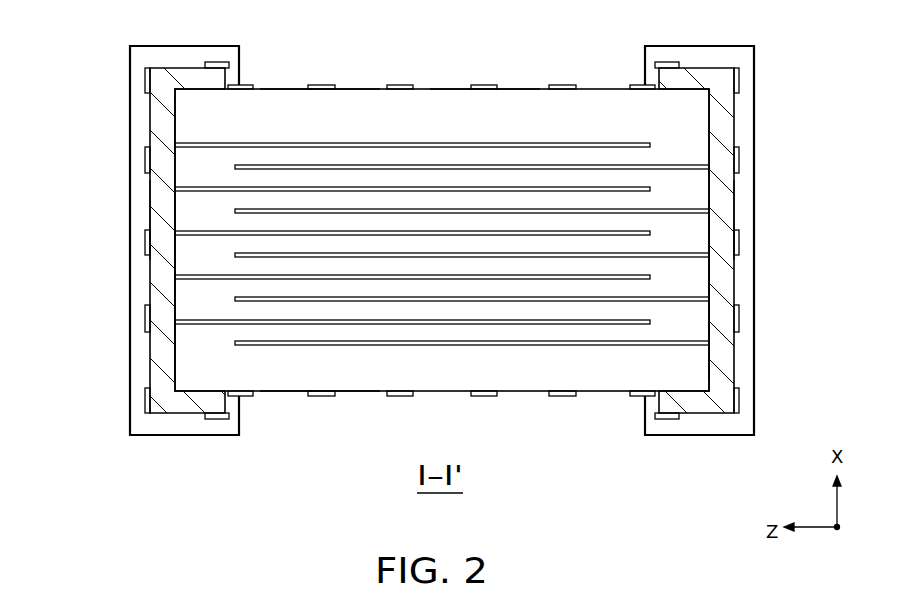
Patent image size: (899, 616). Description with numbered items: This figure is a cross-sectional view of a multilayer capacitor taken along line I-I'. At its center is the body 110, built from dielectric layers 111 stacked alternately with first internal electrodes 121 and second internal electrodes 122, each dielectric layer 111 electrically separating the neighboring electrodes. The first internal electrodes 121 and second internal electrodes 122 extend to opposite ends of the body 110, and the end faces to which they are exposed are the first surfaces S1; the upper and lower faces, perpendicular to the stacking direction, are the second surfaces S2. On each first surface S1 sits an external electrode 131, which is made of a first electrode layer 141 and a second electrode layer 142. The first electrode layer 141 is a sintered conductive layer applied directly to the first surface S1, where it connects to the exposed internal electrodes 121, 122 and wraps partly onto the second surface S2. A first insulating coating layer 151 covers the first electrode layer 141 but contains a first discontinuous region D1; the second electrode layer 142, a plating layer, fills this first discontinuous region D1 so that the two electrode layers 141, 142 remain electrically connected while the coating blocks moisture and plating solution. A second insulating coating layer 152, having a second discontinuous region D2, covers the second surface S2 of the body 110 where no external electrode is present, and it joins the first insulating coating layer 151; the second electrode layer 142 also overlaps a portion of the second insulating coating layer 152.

The body 110 is at (442, 201).
The dielectric layer 111 is at (603, 152).
The first internal electrode 121 is at (343, 142).
The second internal electrode 122 is at (553, 164).
The first external electrode 131 is at (444, 275).
The first electrode layer 141 is at (158, 357).
The second electrode layer 142 is at (137, 327).
The first insulating coating layer 151 is at (146, 163).
The second insulating coating layer 152 is at (400, 84).
The first surface S1 is at (168, 290).
The second surface S2 is at (298, 80).
The first discontinuous region D1 is at (150, 226).
The second discontinuous region D2 is at (462, 88).